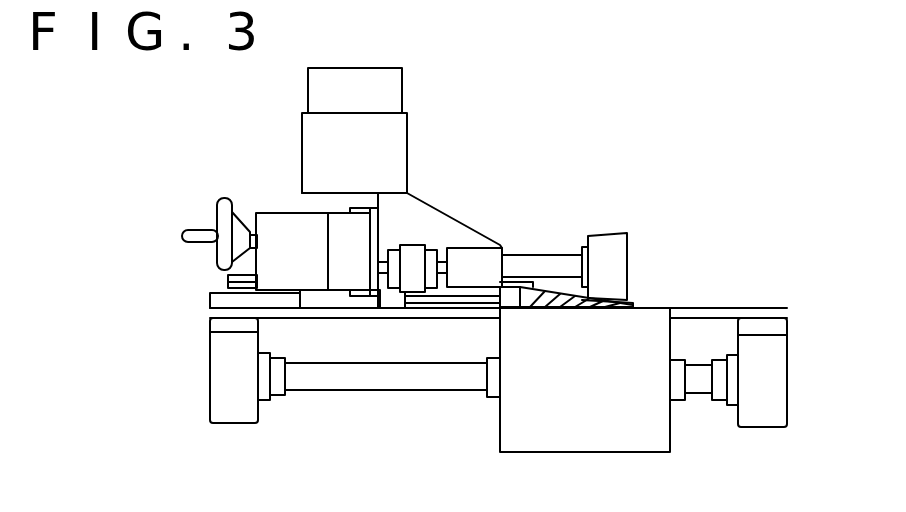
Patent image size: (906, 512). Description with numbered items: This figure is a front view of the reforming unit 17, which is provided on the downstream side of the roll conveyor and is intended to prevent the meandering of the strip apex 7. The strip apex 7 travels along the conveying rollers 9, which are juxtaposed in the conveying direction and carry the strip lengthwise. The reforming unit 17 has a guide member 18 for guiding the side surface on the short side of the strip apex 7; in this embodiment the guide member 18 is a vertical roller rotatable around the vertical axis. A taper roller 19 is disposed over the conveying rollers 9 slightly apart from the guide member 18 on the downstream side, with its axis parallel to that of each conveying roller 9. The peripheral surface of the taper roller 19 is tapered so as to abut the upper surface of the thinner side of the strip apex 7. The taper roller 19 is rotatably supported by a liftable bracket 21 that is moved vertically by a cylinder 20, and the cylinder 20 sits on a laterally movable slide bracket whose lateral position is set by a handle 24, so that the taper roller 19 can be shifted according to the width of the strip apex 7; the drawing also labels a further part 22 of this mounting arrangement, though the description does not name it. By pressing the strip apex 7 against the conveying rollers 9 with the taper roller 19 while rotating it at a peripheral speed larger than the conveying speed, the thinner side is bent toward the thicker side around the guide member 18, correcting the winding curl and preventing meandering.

The strip apex 7 is at (558, 312).
The conveying rollers 9 is at (642, 428).
The reforming unit 17 is at (720, 233).
The guide member 18 is at (512, 290).
The taper roller 19 is at (610, 243).
The cylinder 20 is at (392, 82).
The liftable bracket 21 is at (435, 220).
The feed box 22 is at (273, 218).
The handle 24 is at (223, 200).